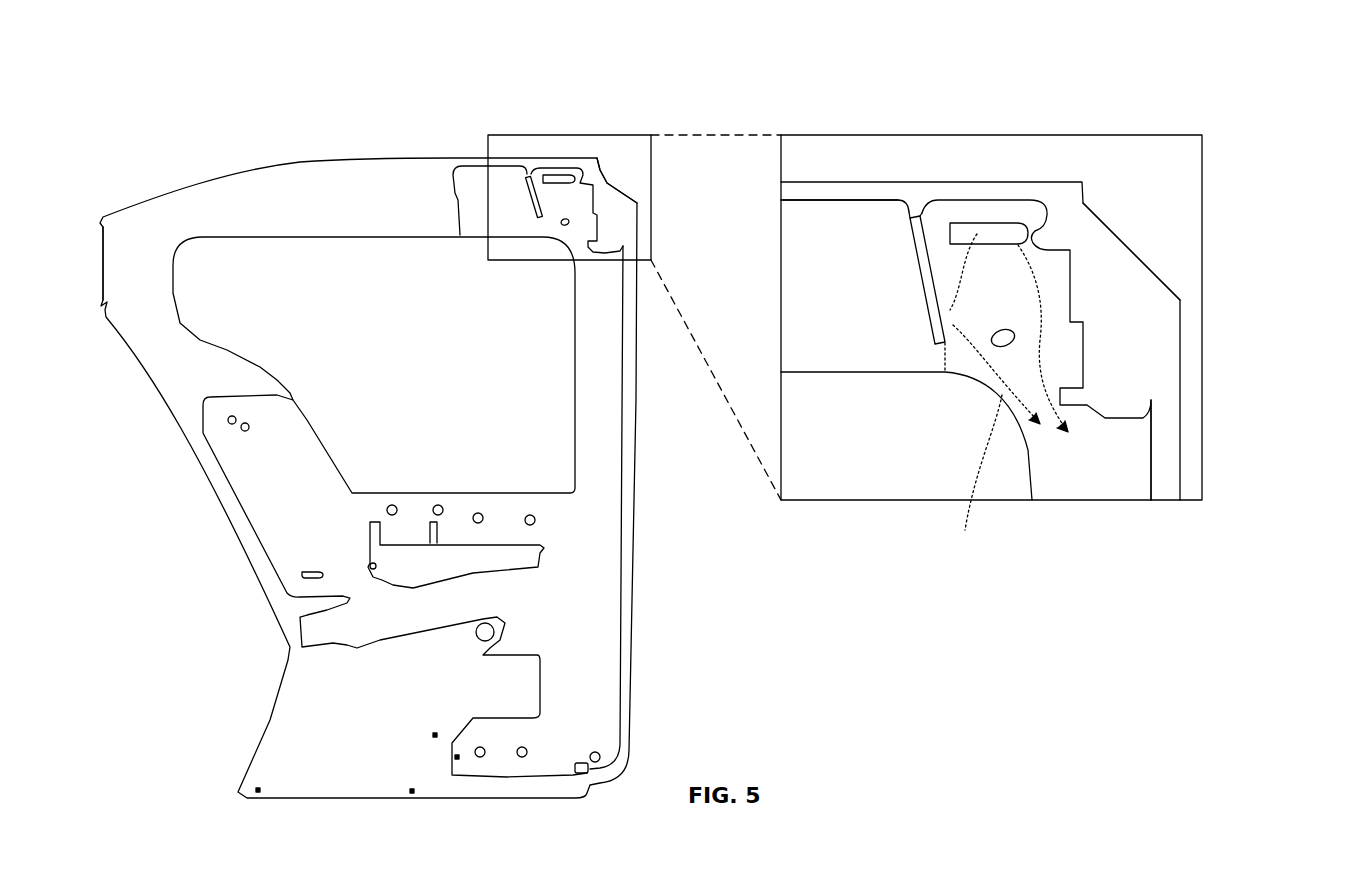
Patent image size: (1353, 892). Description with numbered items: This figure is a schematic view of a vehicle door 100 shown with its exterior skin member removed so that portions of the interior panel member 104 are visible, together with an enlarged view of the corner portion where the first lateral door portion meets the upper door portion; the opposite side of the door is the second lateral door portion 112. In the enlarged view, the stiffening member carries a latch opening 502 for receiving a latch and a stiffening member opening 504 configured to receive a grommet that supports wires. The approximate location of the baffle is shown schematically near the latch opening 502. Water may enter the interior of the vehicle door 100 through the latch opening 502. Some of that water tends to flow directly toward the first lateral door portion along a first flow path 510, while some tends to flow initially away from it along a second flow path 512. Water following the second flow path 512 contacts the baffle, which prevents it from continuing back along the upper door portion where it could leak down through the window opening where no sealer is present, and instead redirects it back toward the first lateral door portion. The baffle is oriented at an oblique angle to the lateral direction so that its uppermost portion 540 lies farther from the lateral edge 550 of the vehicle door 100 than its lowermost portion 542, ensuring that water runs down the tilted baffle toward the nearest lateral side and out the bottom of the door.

The vehicle door 100 is at (312, 152).
The interior panel member 104 is at (197, 213).
The second lateral door portion 112 is at (190, 417).
The latch opening 502 is at (1000, 223).
The stiffening member opening 504 is at (1003, 330).
The first flow path 510 is at (1040, 340).
The second flow path 512 is at (975, 480).
The uppermost portion 540 is at (930, 228).
The lowermost portion 542 is at (945, 372).
The lateral edge 550 is at (1180, 348).